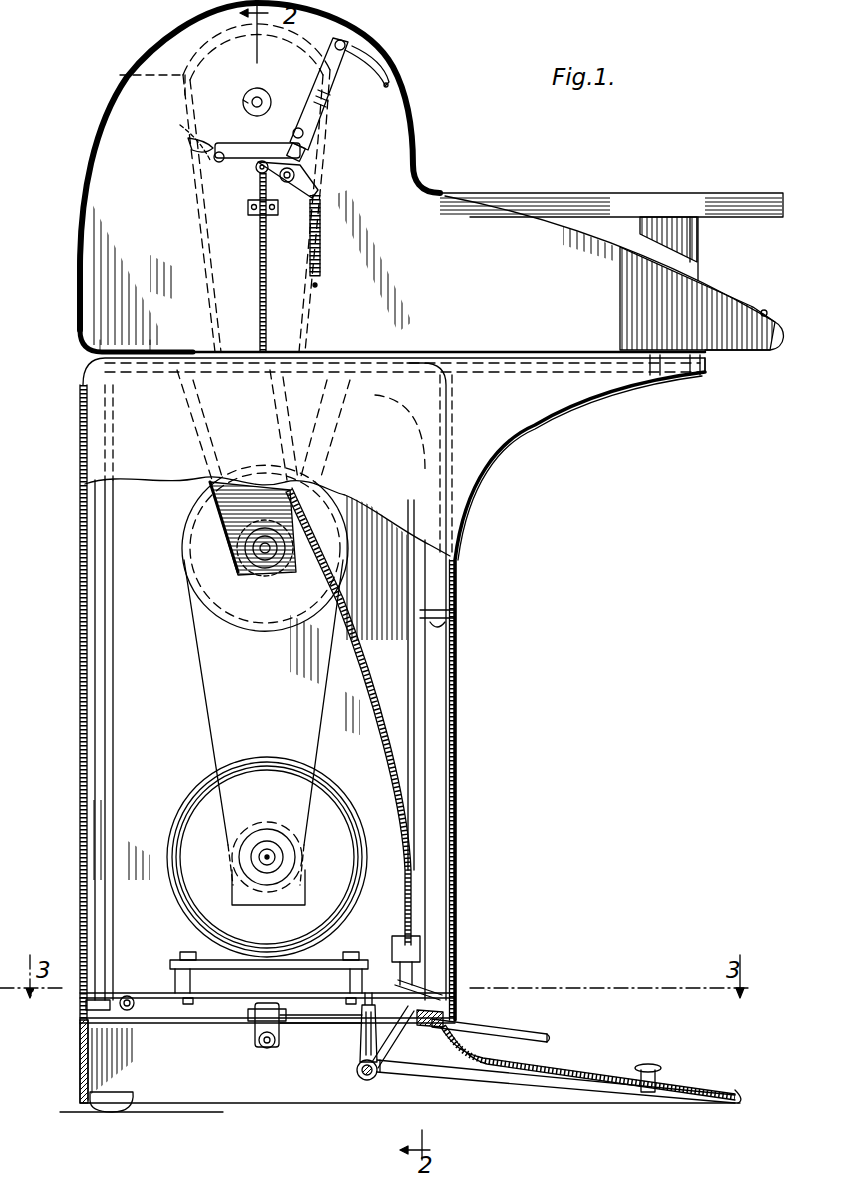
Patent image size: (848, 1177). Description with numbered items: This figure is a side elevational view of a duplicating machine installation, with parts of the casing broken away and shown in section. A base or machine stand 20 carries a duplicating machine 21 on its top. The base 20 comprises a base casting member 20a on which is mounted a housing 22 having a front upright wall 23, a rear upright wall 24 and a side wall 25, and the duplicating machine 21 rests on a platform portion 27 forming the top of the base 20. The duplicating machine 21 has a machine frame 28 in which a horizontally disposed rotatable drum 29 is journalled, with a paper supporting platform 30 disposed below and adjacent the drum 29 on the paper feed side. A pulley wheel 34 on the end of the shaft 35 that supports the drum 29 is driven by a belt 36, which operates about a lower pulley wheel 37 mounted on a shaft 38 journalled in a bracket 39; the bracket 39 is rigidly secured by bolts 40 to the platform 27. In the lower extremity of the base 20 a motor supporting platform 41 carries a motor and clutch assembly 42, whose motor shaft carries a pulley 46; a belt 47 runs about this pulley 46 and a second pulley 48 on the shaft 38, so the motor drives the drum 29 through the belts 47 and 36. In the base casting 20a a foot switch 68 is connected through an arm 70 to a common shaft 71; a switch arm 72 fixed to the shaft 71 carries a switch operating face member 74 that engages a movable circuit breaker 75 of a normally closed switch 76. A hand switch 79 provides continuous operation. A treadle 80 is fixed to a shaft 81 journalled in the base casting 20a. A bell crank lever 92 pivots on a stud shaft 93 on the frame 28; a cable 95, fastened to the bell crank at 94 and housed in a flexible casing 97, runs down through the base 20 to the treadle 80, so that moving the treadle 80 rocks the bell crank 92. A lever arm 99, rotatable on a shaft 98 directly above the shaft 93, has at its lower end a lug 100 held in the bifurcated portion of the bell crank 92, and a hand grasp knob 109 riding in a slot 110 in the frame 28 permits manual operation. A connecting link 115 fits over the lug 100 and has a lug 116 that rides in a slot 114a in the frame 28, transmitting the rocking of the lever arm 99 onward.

The base or machine stand 20 is at (460, 765).
The base casting member 20a is at (600, 1073).
The duplicating machine 21 is at (420, 135).
The housing 22 is at (456, 865).
The front upright wall 23 is at (456, 665).
The rear upright wall 24 is at (78, 668).
The side wall 25 is at (400, 497).
The platform portion 27 is at (520, 378).
The machine frame 28 is at (135, 118).
The rotatable drum 29 is at (190, 55).
The paper supporting platform 30 is at (650, 193).
The pulley wheel 34 is at (131, 78).
The shaft 35 is at (247, 92).
The belt 36 is at (192, 243).
The lower pulley wheel 37 is at (200, 525).
The shaft 38 is at (268, 570).
The bracket 39 is at (215, 490).
The bolts 40 is at (178, 348).
The motor supporting platform 41 is at (215, 995).
The motor and clutch assembly 42 is at (168, 825).
The pulley 46 is at (265, 828).
The belt 47 is at (210, 722).
The second pulley 48 is at (195, 545).
The foot switch 68 is at (660, 1066).
The arm 70 is at (433, 1080).
The common shaft 71 is at (362, 1082).
The switch arm 72 is at (355, 1058).
The switch operating face member 74 is at (325, 1025).
The movable circuit breaker 75 is at (412, 985).
The normally closed switch 76 is at (388, 965).
The hand switch 79 is at (767, 310).
The treadle 80 is at (510, 1030).
The shaft 81 is at (258, 1045).
The bell crank lever 92 is at (305, 185).
The stud shaft 93 is at (294, 174).
The cable fastening 94 is at (256, 175).
The cable 95 is at (248, 205).
The flexible casing 97 is at (259, 266).
The shaft 98 is at (303, 133).
The lever arm 99 is at (330, 100).
The lug 100 is at (303, 152).
The hand grasp knob 109 is at (346, 48).
The slot 110 is at (372, 68).
The slot 114a is at (192, 150).
The connecting link 115 is at (245, 143).
The lug 116 is at (215, 160).